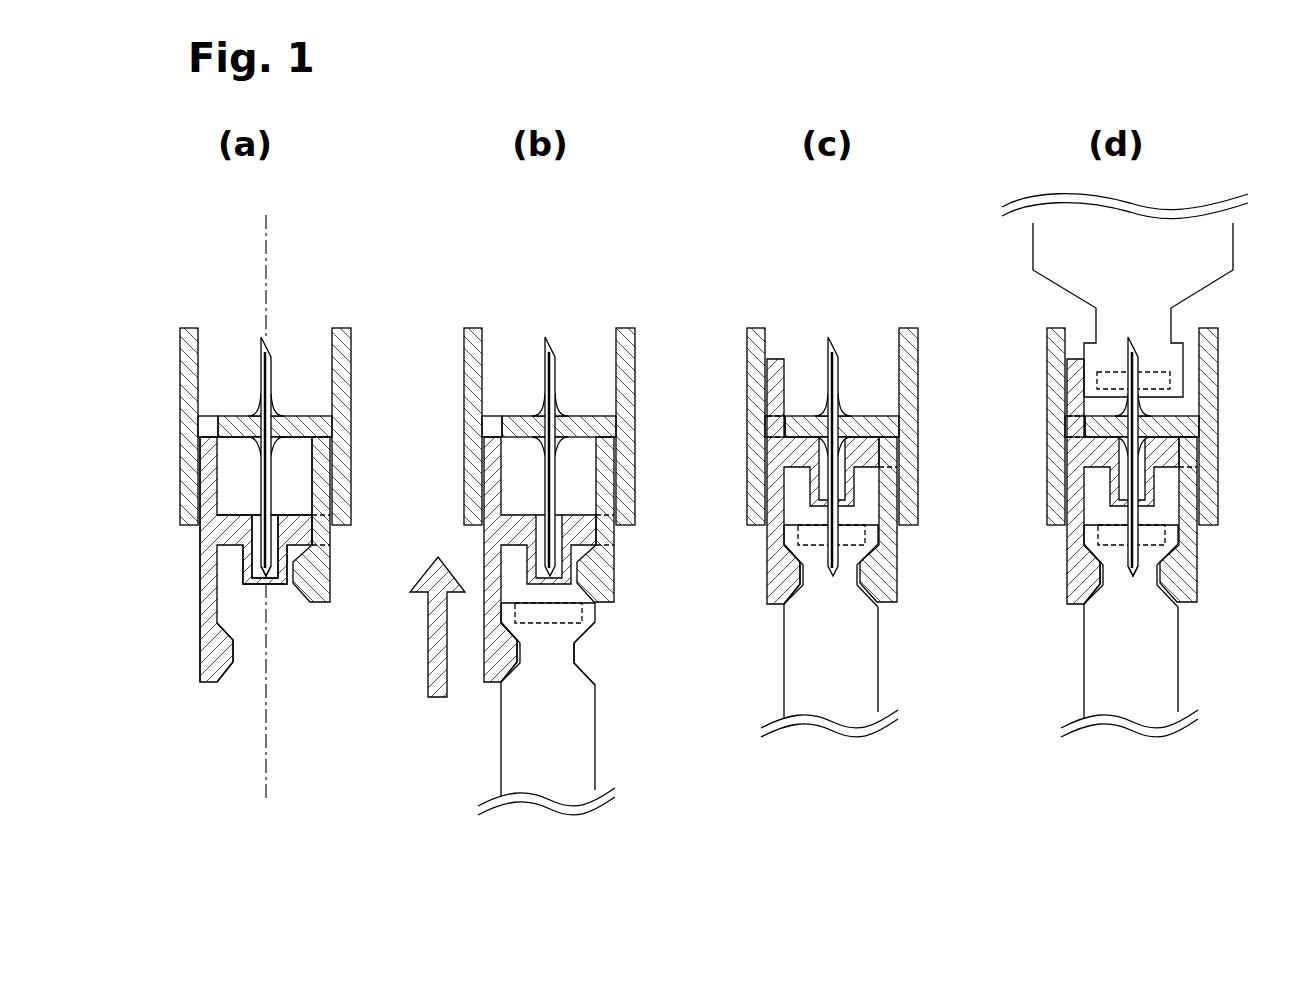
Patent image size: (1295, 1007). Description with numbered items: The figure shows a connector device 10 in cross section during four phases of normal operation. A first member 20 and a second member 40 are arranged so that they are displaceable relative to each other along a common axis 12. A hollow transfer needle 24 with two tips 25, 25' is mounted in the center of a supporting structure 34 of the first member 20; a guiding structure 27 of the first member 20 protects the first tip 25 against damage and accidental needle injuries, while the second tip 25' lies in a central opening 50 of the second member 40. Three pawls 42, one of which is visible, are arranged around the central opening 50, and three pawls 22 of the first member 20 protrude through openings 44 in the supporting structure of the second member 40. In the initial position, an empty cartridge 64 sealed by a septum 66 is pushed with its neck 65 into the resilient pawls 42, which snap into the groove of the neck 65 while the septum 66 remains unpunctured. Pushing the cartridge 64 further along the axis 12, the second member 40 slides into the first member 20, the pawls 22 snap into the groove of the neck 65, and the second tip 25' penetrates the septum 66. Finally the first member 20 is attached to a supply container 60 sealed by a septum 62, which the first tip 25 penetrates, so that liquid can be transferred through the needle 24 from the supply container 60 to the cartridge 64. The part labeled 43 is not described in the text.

The connector device 10 is at (206, 280).
The common axis 12 is at (272, 256).
The first member 20 is at (696, 397).
The pawls 22 is at (771, 563).
The hollow transfer needle 24 is at (260, 483).
The first tip 25 is at (700, 478).
The second tip 25' is at (700, 633).
The guiding structure 27 is at (637, 440).
The supporting structure 34 is at (300, 416).
The second member 40 is at (666, 553).
The pawls 42 is at (208, 655).
The arm 43 is at (203, 600).
The openings 44 is at (330, 528).
The central opening 50 is at (273, 590).
The supply container 60 is at (1130, 316).
The septum 62 is at (1108, 380).
The cartridge 64 is at (814, 670).
The neck 65 is at (588, 660).
The septum 66 is at (566, 620).